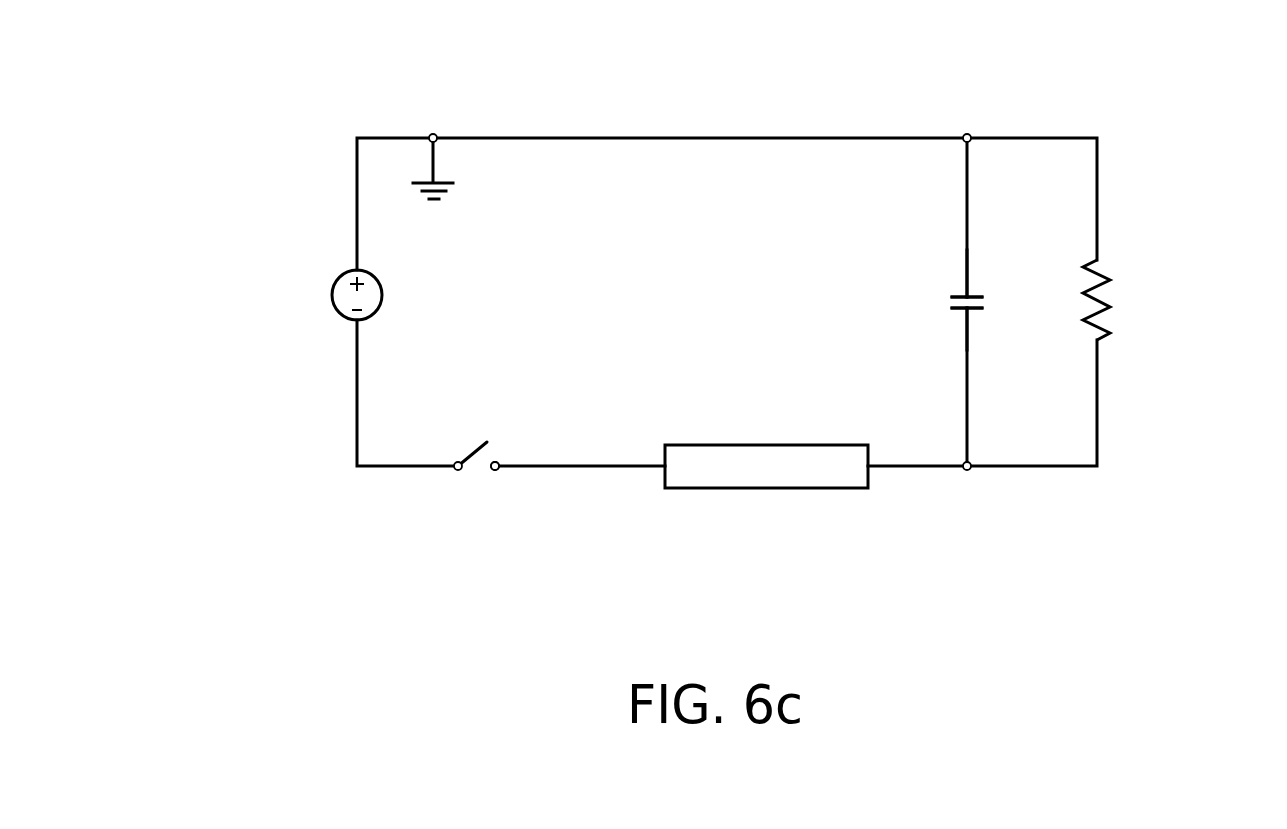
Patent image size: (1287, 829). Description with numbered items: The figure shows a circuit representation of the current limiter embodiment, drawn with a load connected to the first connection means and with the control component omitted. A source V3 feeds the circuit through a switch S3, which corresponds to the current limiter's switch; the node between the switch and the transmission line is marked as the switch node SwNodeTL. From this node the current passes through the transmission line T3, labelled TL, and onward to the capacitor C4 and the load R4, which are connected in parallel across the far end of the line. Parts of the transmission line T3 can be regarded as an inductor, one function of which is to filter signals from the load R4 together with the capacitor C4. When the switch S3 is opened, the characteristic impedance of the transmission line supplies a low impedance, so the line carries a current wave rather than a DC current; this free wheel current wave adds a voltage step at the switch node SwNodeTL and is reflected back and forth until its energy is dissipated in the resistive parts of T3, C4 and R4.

The voltage source V3 is at (333, 267).
The switch S3 is at (458, 447).
The switch node to transmission line SwNodeTL is at (500, 480).
The transmission line T3 is at (789, 504).
The capacitor C4 is at (988, 268).
The load R4 is at (1120, 287).